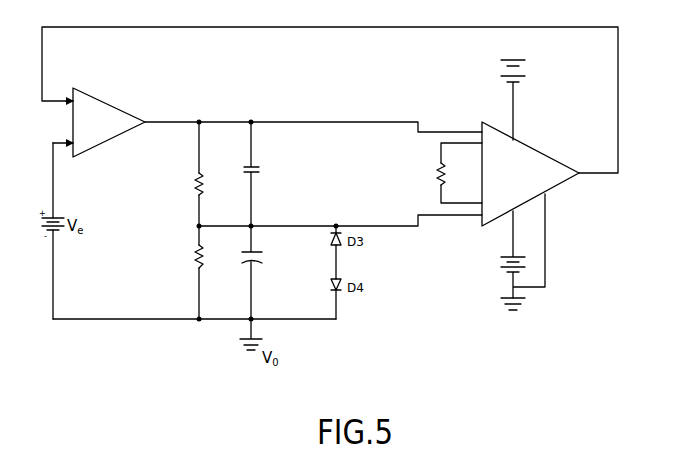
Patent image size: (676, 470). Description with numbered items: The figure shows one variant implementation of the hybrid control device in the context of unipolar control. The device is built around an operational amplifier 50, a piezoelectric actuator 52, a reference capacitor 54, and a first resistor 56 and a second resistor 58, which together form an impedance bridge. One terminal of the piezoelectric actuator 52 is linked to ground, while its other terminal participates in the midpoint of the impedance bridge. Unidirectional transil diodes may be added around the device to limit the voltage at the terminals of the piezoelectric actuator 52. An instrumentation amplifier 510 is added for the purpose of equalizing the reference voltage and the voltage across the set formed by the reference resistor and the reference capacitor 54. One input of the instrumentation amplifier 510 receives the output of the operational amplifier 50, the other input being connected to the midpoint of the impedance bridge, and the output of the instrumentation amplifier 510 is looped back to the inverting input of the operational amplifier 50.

The operational amplifier 50 is at (108, 99).
The piezoelectric actuator 52 is at (266, 260).
The reference capacitor 54 is at (263, 170).
The first resistor 56 is at (194, 258).
The second resistor 58 is at (194, 181).
The instrumentation amplifier 510 is at (526, 139).